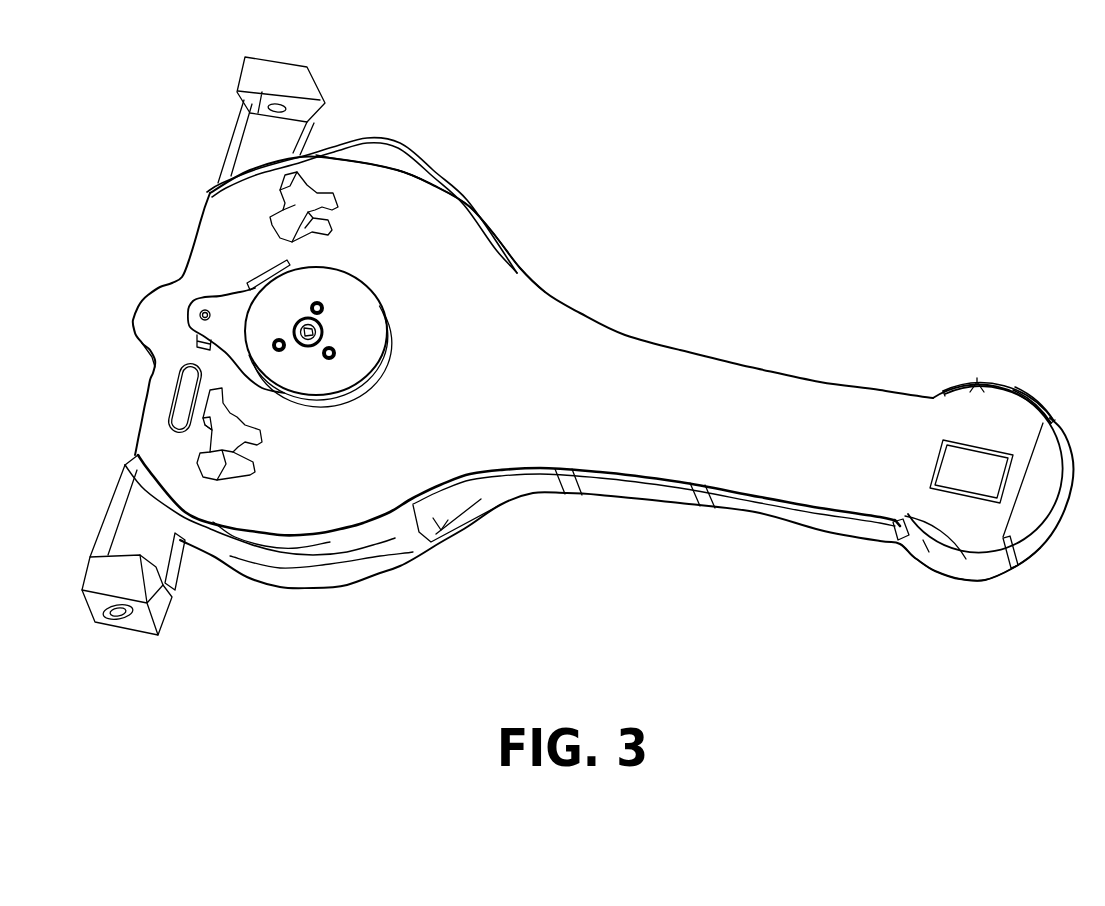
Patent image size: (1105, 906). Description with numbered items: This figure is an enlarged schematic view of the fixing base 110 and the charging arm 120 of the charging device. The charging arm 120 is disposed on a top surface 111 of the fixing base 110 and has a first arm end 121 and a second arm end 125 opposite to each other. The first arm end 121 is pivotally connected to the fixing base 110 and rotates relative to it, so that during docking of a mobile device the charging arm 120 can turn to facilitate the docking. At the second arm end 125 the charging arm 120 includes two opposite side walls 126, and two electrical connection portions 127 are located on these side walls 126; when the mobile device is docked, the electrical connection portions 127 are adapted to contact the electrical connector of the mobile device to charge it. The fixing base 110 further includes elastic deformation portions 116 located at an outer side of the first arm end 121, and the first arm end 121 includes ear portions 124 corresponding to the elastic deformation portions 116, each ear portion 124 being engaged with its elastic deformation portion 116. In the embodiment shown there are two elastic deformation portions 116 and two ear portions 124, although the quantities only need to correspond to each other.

The fixing base 110 is at (482, 208).
The top surface 111 is at (480, 500).
The elastic deformation portion 116 is at (363, 139).
The charging arm 120 is at (726, 337).
The first arm end 121 is at (430, 217).
The ear portion 124 is at (383, 155).
The second arm end 125 is at (937, 413).
The side wall 126 is at (983, 378).
The electrical connection portion 127 is at (1017, 406).